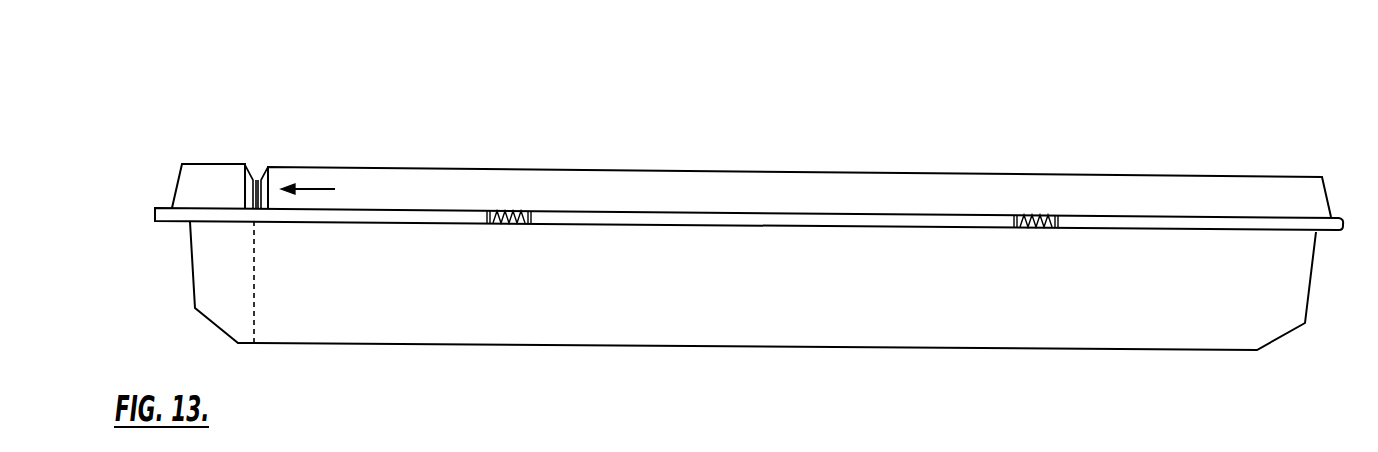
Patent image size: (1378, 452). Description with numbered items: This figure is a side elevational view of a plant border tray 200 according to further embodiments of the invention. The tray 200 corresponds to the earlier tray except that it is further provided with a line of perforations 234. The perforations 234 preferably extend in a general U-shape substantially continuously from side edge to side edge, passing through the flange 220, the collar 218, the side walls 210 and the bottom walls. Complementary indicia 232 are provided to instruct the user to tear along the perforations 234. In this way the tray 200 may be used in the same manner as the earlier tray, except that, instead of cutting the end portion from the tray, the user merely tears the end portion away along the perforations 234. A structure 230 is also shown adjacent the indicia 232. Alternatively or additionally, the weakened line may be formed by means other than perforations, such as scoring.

The plant border tray 200 is at (866, 85).
The side walls 210 is at (283, 307).
The collar 218 is at (217, 179).
The flange 220 is at (705, 218).
The tear strip 230 is at (268, 187).
The indicia 232 is at (383, 171).
The perforations 234 is at (254, 263).